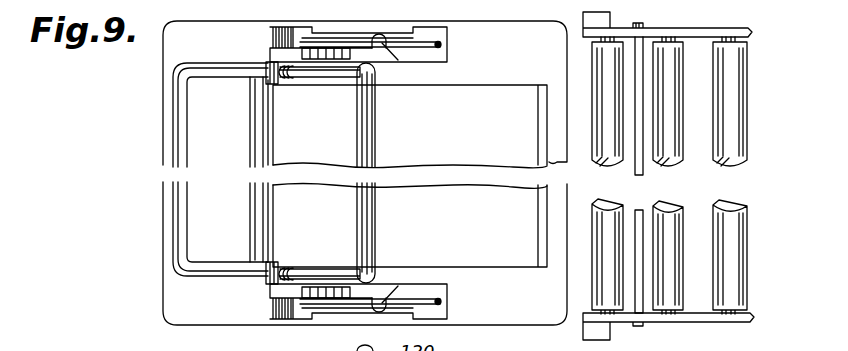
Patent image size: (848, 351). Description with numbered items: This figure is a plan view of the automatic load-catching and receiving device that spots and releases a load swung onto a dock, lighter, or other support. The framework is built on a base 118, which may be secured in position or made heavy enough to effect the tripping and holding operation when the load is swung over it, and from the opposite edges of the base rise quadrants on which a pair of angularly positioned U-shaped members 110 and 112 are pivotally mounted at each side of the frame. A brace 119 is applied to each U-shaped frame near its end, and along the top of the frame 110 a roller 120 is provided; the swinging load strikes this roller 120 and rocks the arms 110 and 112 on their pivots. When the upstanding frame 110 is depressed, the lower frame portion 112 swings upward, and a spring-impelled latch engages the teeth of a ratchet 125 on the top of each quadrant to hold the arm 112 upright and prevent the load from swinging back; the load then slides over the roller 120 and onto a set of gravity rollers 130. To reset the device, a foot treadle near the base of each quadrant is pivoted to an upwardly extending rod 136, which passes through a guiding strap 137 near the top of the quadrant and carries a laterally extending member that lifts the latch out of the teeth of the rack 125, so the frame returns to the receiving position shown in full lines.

The U-shaped member 110 is at (340, 73).
The U-shaped member 112 is at (217, 276).
The base 118 is at (527, 318).
The brace 119 is at (258, 206).
The roller 120 is at (374, 126).
The ratchet 125 is at (280, 58).
The gravity rollers 130 is at (698, 313).
The upwardly extending rod 136 is at (415, 52).
The guiding strap 137 is at (384, 46).